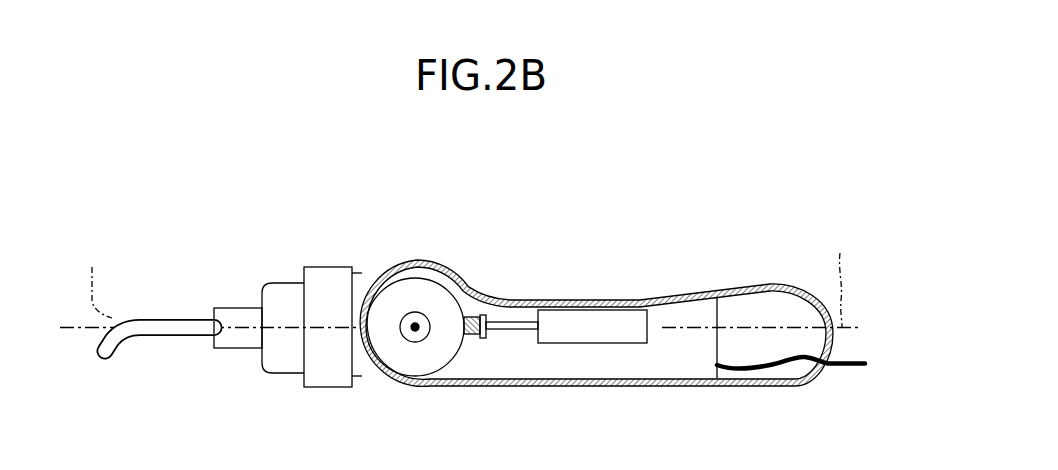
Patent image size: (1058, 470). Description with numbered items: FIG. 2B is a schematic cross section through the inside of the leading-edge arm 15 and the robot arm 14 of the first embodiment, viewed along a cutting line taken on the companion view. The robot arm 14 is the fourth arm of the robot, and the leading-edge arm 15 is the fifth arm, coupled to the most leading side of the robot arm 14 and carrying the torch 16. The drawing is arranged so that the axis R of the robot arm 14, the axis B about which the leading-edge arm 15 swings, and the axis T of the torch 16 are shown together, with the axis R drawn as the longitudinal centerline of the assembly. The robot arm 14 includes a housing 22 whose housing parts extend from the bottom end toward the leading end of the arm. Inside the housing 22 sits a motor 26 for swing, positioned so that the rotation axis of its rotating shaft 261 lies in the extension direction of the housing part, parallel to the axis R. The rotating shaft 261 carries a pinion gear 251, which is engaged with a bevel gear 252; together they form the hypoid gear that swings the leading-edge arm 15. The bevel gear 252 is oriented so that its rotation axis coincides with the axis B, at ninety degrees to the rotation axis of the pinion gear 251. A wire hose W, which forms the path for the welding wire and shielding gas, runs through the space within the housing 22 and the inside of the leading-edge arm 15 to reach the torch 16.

The robot arm 14 is at (602, 292).
The leading-edge arm 15 is at (326, 257).
The torch 16 is at (173, 318).
The housing 22 is at (750, 285).
The motor for swing 26 is at (592, 323).
The pinion gear 251 is at (468, 315).
The bevel gear 252 is at (405, 362).
The rotating shaft 261 is at (518, 318).
The axis B is at (418, 322).
The axis T is at (99, 278).
The axis R is at (843, 279).
The wire hose W is at (762, 371).